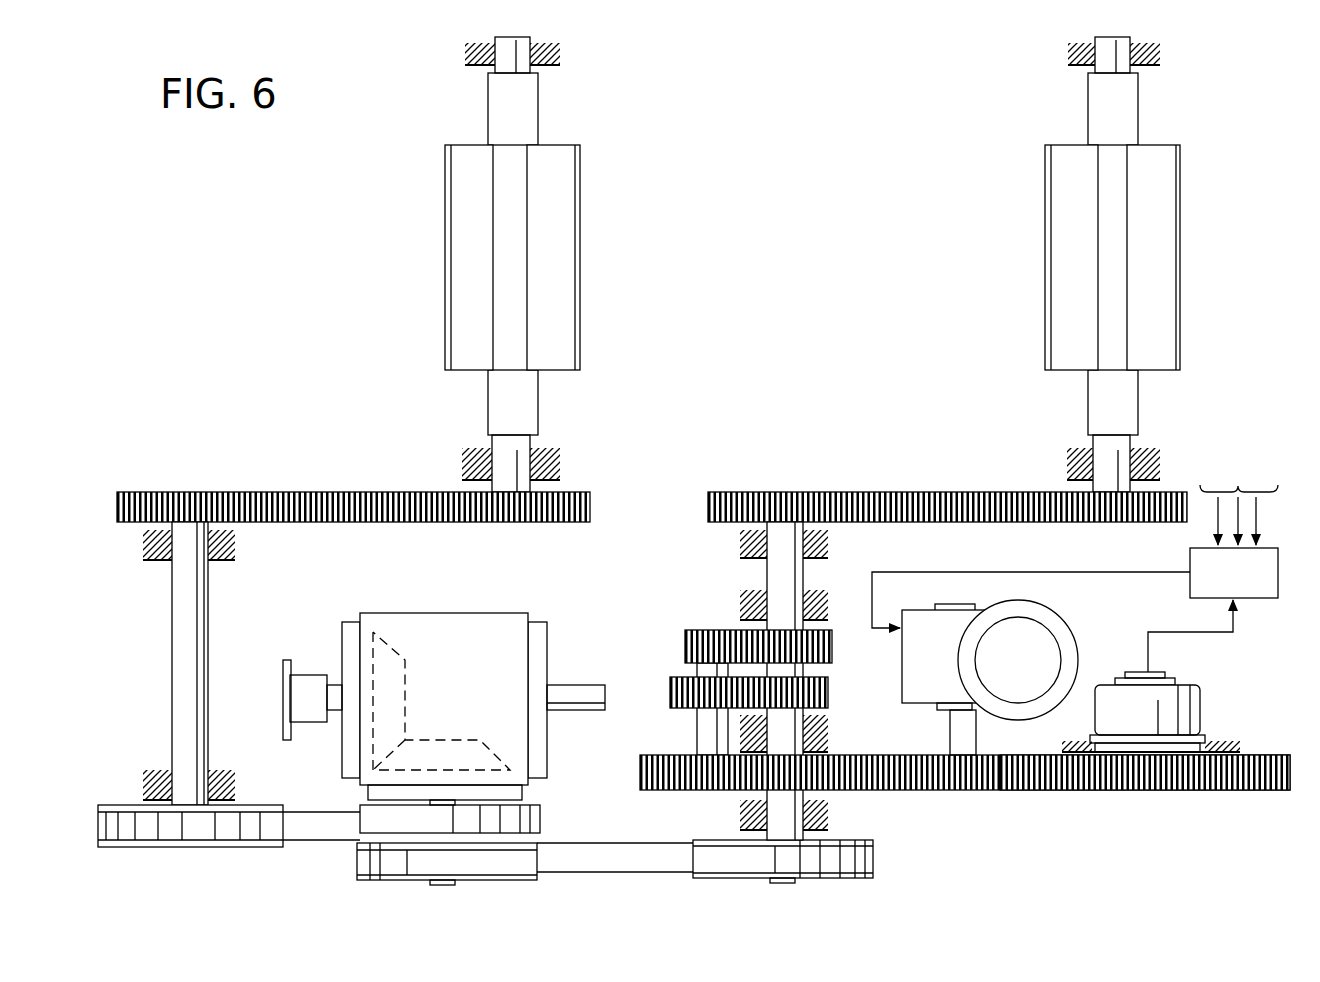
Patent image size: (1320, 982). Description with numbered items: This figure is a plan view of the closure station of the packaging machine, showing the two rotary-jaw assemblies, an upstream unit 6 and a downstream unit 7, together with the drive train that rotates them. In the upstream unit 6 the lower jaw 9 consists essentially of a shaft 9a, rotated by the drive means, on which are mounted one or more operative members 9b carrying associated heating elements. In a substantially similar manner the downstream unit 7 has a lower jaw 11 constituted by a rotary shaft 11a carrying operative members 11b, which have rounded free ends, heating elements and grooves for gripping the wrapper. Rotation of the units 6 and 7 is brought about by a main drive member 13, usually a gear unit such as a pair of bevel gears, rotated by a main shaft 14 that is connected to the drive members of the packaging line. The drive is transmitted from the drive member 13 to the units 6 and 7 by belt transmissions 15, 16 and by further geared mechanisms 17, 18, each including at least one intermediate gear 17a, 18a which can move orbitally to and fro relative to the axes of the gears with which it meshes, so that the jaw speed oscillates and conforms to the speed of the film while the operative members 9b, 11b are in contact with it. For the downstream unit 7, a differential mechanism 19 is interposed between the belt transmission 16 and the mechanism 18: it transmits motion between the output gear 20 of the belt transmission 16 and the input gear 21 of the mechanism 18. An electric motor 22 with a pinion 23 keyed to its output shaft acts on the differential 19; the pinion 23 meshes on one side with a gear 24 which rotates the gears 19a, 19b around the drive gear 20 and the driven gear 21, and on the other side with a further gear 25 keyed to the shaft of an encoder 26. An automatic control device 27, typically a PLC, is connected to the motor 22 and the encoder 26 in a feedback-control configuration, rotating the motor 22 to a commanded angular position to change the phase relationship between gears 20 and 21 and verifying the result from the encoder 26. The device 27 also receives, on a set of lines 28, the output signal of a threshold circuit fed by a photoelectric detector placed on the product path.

The upstream unit 6 is at (548, 264).
The downstream unit 7 is at (1099, 264).
The lower jaw 9 is at (548, 254).
The shaft 9a is at (498, 408).
The operative members 9b is at (444, 240).
The lower jaw 11 is at (1099, 254).
The rotary shaft 11a is at (1122, 403).
The operative members 11b is at (1166, 270).
The main drive member 13 is at (430, 625).
The main shaft 14 is at (302, 690).
The belt transmission 15 is at (316, 818).
The belt transmission 16 is at (878, 846).
The geared mechanism 17 is at (295, 530).
The intermediate gear 17a is at (298, 492).
The geared mechanism 18 is at (878, 488).
The intermediate gear 18a is at (952, 492).
The differential mechanism 19 is at (732, 656).
The gear 19a is at (732, 720).
The gear 19b is at (750, 622).
The drive gear 20 is at (833, 695).
The driven gear 21 is at (835, 645).
The electric motor 22 is at (1066, 632).
The pinion 23 is at (968, 792).
The gear 24 is at (903, 792).
The gear 25 is at (1262, 792).
The encoder 26 is at (1203, 716).
The automatic control device 27 is at (1256, 598).
The set of lines 28 is at (1238, 485).